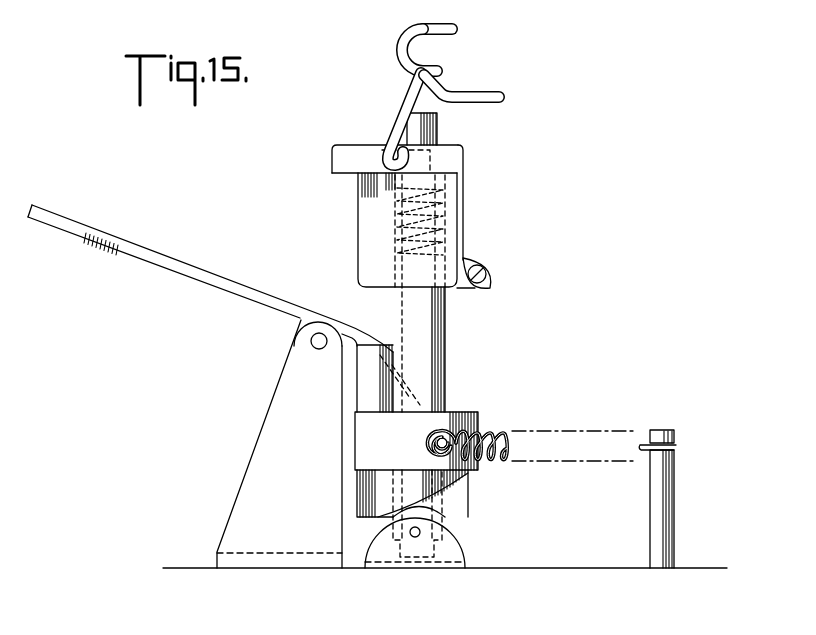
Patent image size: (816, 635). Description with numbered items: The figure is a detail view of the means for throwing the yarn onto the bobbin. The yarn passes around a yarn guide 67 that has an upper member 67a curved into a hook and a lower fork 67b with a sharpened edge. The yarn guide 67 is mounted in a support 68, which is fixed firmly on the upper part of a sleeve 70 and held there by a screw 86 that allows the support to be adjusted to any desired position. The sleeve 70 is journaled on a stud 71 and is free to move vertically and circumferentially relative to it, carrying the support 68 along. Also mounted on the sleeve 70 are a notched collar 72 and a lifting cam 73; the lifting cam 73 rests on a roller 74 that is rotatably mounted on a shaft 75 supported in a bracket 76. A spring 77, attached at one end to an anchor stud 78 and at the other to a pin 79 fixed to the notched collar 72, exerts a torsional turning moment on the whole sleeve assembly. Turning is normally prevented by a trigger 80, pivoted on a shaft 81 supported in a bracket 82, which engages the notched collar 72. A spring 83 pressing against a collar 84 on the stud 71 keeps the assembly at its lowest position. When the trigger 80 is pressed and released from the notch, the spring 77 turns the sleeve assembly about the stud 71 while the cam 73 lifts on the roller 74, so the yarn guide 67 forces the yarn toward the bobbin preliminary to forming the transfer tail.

The yarn guide 67 is at (436, 82).
The upper member 67a is at (442, 27).
The lower fork 67b is at (479, 95).
The support 68 is at (347, 168).
The sleeve 70 is at (393, 300).
The stud 71 is at (441, 135).
The notched collar 72 is at (450, 418).
The lifting cam 73 is at (461, 498).
The roller 74 is at (427, 513).
The shaft 75 is at (421, 532).
The bracket 76 is at (455, 548).
The spring 77 is at (500, 440).
The anchor stud 78 is at (665, 493).
The pin 79 is at (437, 447).
The trigger 80 is at (207, 280).
The shaft 81 is at (311, 341).
The bracket 82 is at (287, 378).
The spring 83 is at (460, 200).
The collar 84 is at (463, 152).
The screw 86 is at (487, 275).